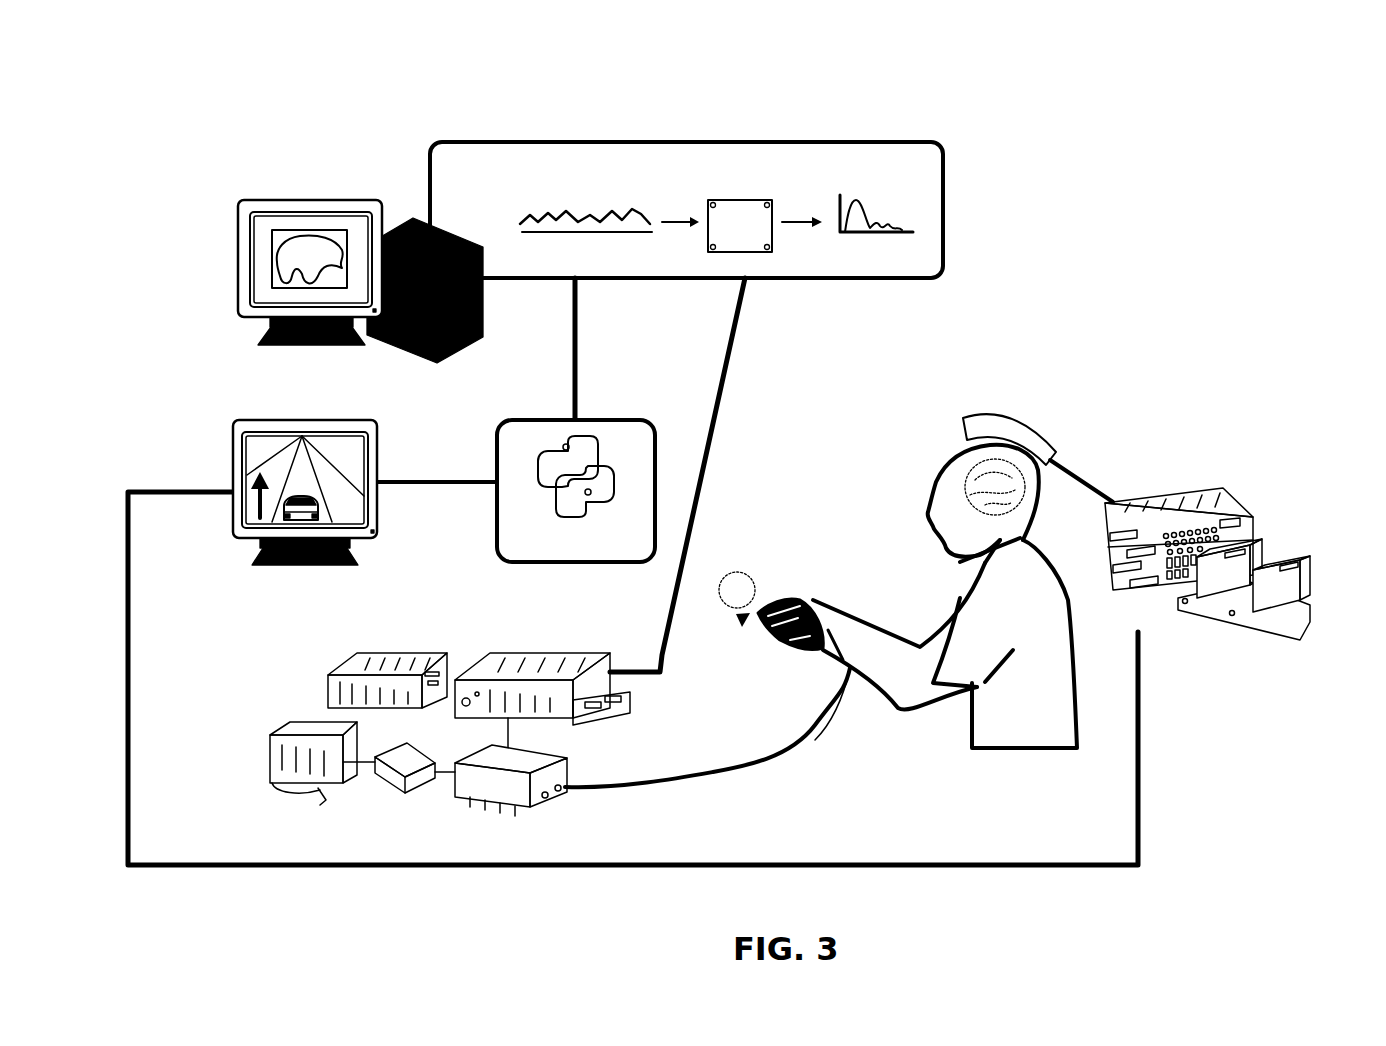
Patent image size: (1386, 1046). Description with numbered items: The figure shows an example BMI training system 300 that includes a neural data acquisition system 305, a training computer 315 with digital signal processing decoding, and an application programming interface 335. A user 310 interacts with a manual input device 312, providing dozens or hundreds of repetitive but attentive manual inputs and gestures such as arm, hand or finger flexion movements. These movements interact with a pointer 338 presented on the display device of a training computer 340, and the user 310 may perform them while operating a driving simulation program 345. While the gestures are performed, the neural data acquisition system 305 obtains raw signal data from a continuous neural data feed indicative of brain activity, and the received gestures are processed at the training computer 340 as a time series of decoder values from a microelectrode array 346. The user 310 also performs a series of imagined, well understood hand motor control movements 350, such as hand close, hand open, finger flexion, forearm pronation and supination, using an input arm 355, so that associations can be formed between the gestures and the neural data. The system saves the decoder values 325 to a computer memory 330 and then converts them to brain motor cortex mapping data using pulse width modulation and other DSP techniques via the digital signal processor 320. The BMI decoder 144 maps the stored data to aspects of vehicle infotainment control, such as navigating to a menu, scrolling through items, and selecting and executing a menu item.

The BMI training system 300 is at (1097, 298).
The neural data acquisition system 305 is at (1235, 497).
The user 310 is at (953, 457).
The manual input device 312 is at (847, 677).
The training computer 315 is at (310, 197).
The digital signal processor 320 is at (517, 142).
The decoder values 325 is at (597, 160).
The computer memory 330 is at (733, 160).
The BMI decoder 144 is at (893, 160).
The application programming interface 335 is at (623, 420).
The pointer 338 is at (257, 505).
The training computer 340 is at (377, 442).
The driving simulation program 345 is at (322, 452).
The microelectrode array 346 is at (973, 420).
The hand motor control movements 350 is at (725, 618).
The input arm 355 is at (930, 637).